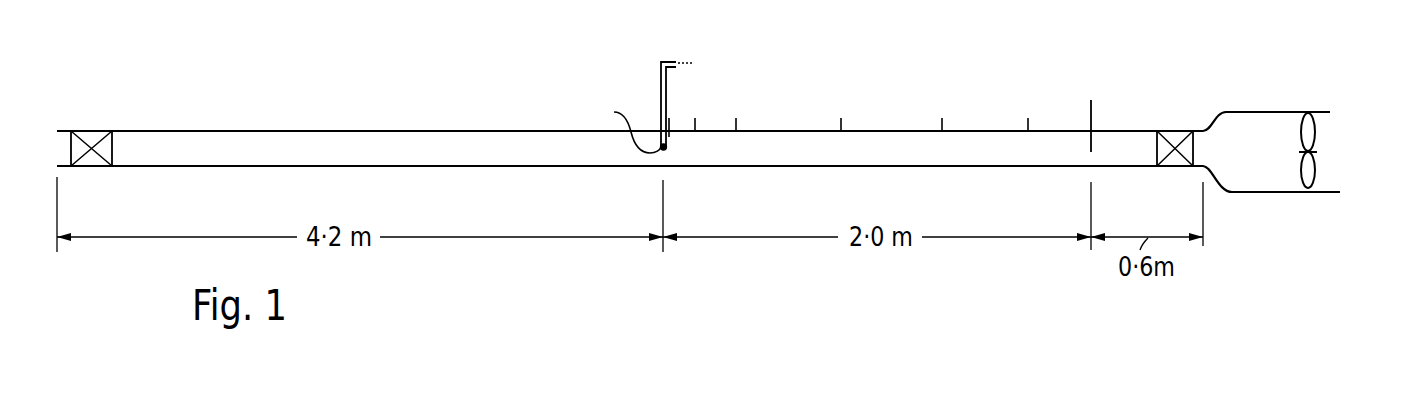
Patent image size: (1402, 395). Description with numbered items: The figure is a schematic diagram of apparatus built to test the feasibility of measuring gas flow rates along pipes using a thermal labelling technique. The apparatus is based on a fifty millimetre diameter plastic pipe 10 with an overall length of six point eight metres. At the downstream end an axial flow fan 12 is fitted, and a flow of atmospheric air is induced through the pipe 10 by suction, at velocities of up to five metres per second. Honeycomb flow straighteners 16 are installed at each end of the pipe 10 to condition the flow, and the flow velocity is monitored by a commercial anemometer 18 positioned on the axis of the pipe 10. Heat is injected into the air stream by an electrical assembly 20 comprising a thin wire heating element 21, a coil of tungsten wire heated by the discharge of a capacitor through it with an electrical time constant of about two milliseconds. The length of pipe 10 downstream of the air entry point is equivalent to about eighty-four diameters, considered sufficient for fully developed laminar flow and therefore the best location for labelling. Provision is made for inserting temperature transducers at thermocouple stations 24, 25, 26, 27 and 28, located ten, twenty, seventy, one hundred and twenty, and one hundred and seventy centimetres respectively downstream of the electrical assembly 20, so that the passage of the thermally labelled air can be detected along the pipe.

The plastic pipe 10 is at (368, 130).
The axial flow fan 12 is at (1310, 175).
The honeycomb flow straighteners 16 is at (86, 130).
The anemometer 18 is at (1096, 115).
The electrical assembly 20 is at (658, 123).
The heating element 21 is at (625, 124).
The thermocouple station 24 is at (695, 106).
The thermocouple station 25 is at (738, 106).
The thermocouple station 26 is at (841, 109).
The thermocouple station 27 is at (939, 109).
The thermocouple station 28 is at (1026, 109).